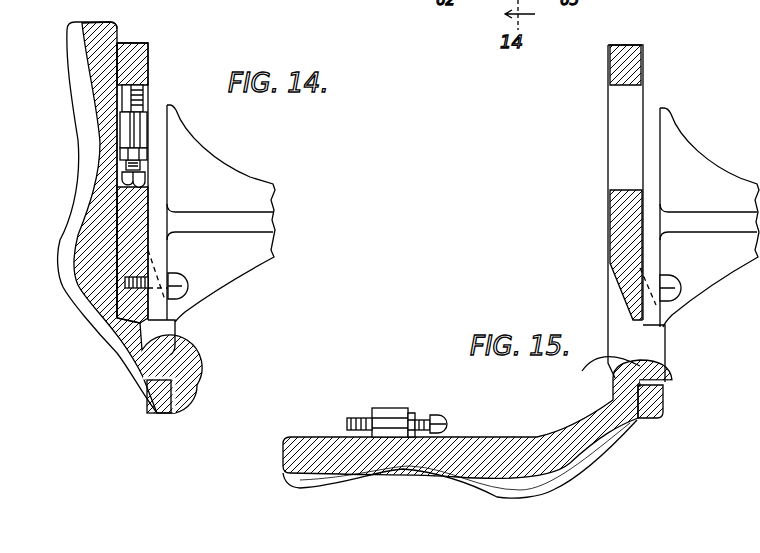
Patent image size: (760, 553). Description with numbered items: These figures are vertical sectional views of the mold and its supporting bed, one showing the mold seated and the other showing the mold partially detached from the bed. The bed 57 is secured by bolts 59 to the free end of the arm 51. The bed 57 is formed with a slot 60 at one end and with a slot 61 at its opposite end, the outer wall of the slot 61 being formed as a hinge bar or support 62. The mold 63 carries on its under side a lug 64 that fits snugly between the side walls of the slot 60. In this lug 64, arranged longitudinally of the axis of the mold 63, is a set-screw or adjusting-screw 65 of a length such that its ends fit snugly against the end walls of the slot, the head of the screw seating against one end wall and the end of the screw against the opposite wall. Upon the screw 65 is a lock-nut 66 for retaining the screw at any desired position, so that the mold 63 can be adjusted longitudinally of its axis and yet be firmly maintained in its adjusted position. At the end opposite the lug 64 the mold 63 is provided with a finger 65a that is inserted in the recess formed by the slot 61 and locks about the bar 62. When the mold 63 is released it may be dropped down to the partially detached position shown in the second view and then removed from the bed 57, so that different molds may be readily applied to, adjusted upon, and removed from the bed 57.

In FIG. 14, the arm 51 is at (228, 181).
In FIG. 15, the arm 51 is at (698, 176).
In FIG. 14, the bed 57 is at (148, 56).
In FIG. 15, the bed 57 is at (631, 63).
In FIG. 14, the bolt 59 is at (181, 284).
In FIG. 15, the bolt 59 is at (673, 287).
In FIG. 14, the slot 60 is at (142, 97).
In FIG. 15, the slot 60 is at (616, 140).
In FIG. 14, the slot 61 is at (171, 335).
In FIG. 15, the slot 61 is at (660, 352).
In FIG. 14, the hinge bar 62 is at (165, 414).
In FIG. 15, the hinge bar 62 is at (665, 404).
In FIG. 14, the mold 63 is at (87, 183).
In FIG. 15, the mold 63 is at (490, 482).
In FIG. 14, the lug 64 is at (133, 122).
In FIG. 15, the lug 64 is at (392, 418).
In FIG. 14, the adjusting-screw 65 is at (142, 174).
In FIG. 15, the adjusting-screw 65 is at (441, 414).
In FIG. 14, the finger 65a is at (197, 373).
In FIG. 15, the finger 65a is at (596, 371).
In FIG. 14, the lock-nut 66 is at (97, 152).
In FIG. 15, the lock-nut 66 is at (413, 407).